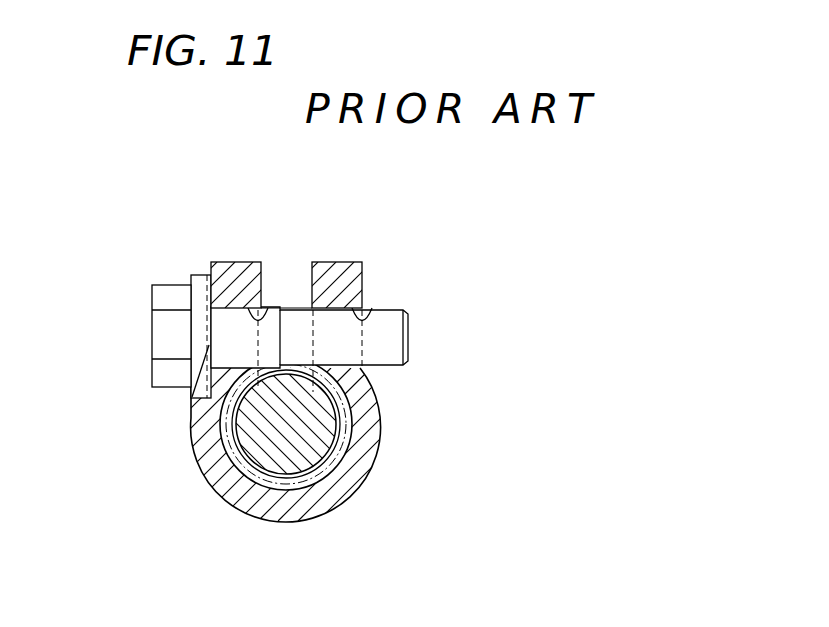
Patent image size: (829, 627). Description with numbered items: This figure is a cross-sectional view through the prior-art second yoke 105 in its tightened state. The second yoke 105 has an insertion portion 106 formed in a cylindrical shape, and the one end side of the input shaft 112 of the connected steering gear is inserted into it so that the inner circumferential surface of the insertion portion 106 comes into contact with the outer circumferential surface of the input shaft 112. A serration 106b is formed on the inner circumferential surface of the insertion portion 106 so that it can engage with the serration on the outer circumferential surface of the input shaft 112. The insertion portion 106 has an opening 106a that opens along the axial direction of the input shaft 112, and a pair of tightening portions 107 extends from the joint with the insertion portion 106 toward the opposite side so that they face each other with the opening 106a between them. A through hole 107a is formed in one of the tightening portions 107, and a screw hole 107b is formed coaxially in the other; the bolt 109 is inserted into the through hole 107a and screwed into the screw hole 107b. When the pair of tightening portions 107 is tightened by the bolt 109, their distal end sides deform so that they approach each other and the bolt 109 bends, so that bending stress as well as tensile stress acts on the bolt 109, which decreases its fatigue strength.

The second yoke 105 is at (197, 247).
The insertion portion 106 is at (357, 480).
The opening 106a is at (295, 297).
The serration 106b is at (246, 455).
The tightening portions 107 is at (243, 267).
The through hole 107a is at (262, 318).
The screw hole 107b is at (365, 317).
The bolt 109 is at (158, 335).
The input shaft 112 is at (330, 433).